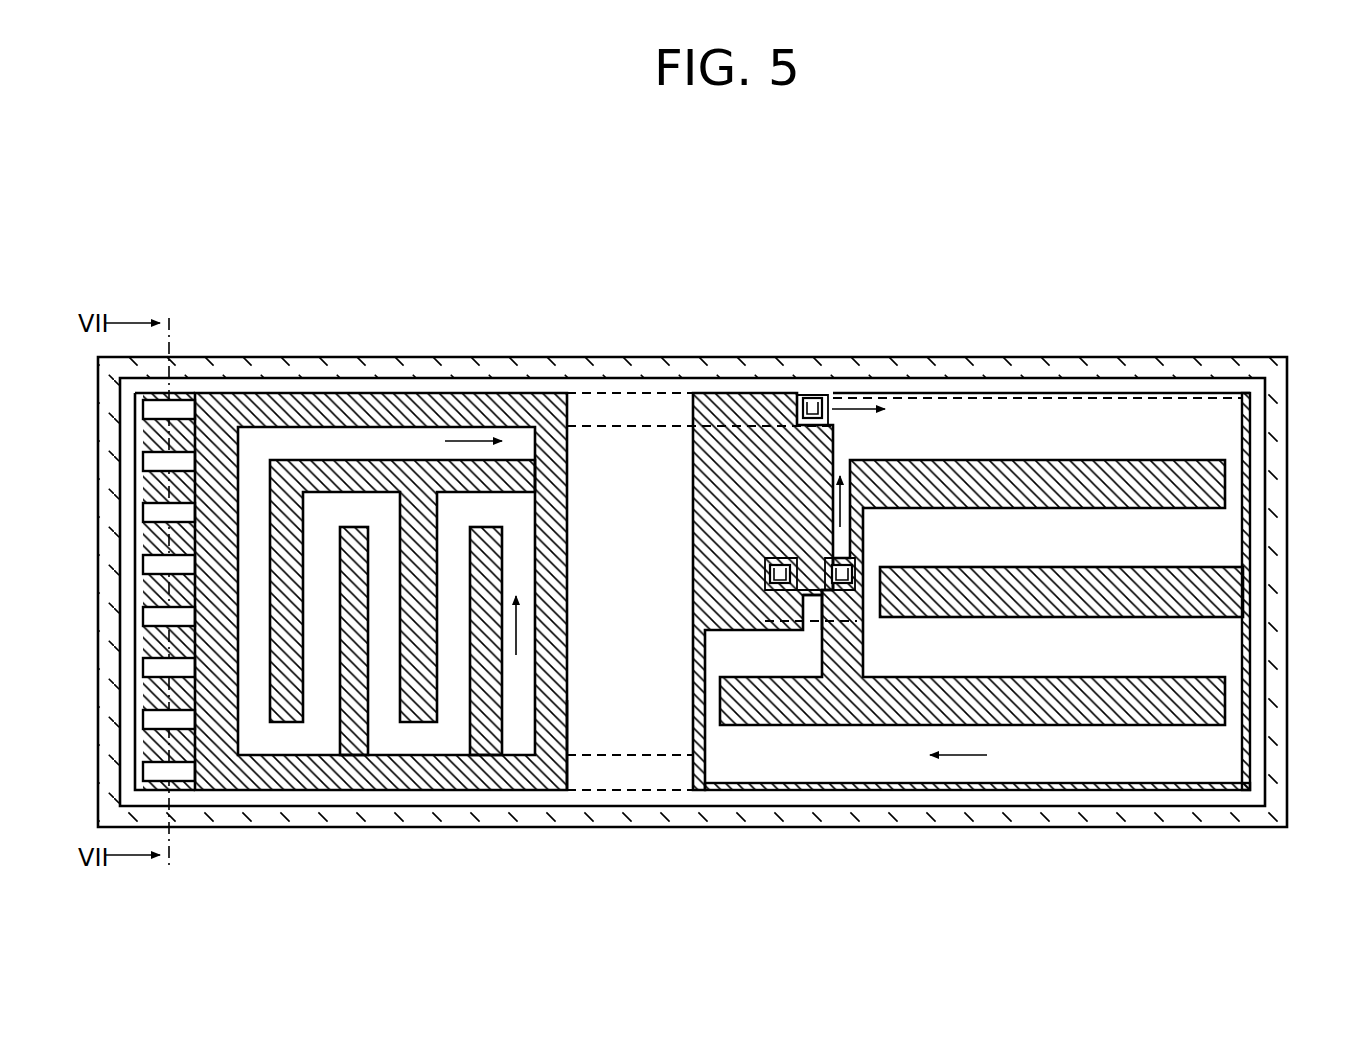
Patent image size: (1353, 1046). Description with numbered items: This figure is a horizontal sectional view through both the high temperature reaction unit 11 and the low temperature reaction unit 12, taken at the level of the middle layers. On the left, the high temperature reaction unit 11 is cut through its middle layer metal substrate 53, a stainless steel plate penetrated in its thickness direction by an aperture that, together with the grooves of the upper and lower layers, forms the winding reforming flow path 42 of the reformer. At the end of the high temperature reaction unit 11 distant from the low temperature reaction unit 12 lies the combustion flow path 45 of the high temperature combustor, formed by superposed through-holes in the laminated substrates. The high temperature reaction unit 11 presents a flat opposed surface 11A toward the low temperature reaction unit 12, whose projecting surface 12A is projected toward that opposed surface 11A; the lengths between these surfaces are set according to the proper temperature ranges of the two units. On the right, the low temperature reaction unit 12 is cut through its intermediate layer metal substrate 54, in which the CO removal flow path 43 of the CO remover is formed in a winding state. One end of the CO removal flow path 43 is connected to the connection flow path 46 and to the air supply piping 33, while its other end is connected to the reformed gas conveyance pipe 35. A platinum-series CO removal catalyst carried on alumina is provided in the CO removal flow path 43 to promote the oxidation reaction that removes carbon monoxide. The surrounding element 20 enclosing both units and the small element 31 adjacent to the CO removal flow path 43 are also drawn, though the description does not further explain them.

The high temperature reaction unit 11 is at (145, 583).
The opposed surface 11A is at (567, 708).
The low temperature reaction unit 12 is at (1182, 594).
The projecting surface 12A is at (693, 578).
The housing frame 20 is at (1282, 372).
The first heat generating element 31 is at (778, 565).
The air supply piping 33 is at (843, 558).
The reformed gas conveyance pipe 35 is at (805, 620).
The reforming flow path 42 is at (384, 440).
The CO removal flow path 43 is at (1142, 423).
The combustion flow path 45 is at (162, 508).
The connection flow path 46 is at (808, 397).
The middle layer metal substrate 53 is at (350, 748).
The intermediate layer metal substrate 54 is at (1218, 567).